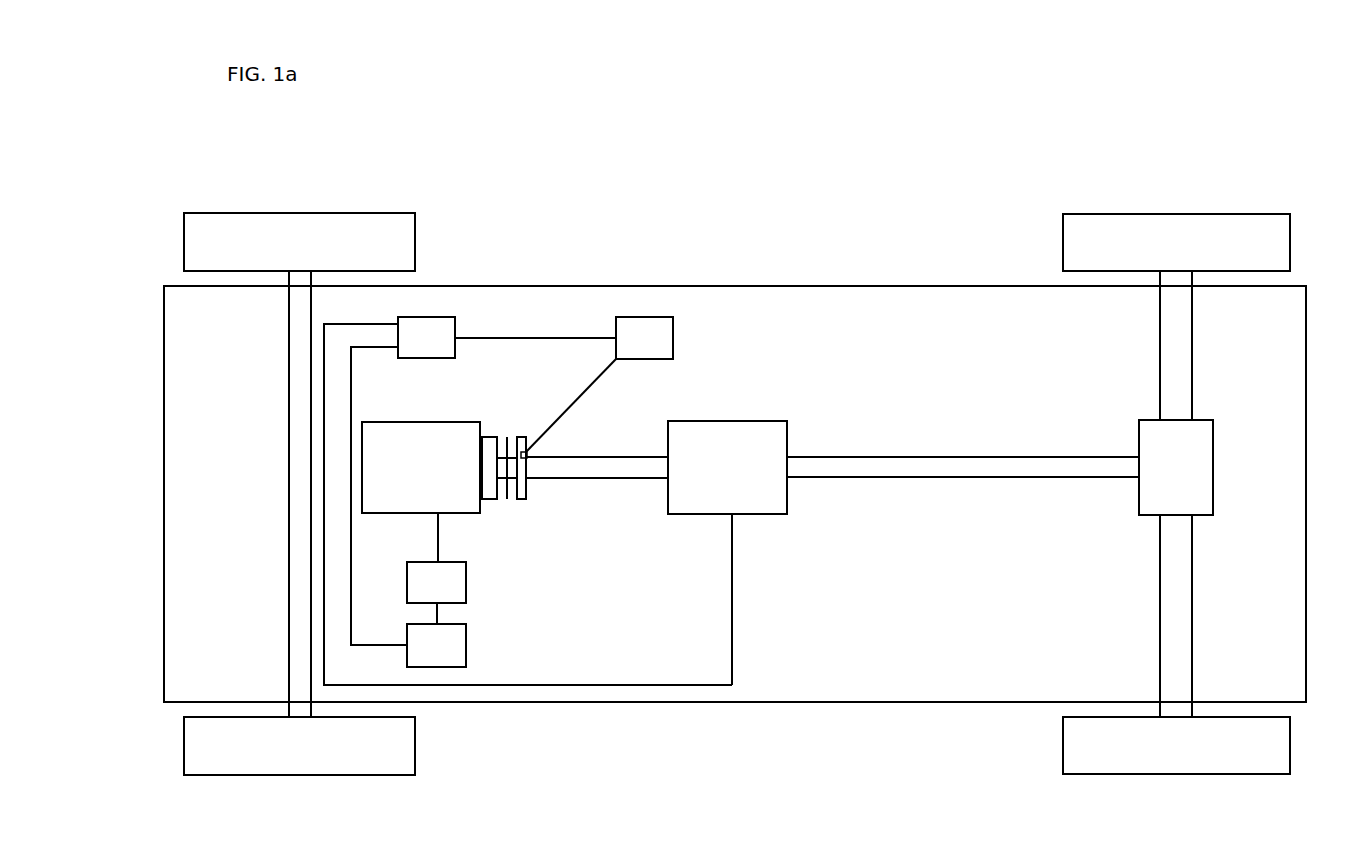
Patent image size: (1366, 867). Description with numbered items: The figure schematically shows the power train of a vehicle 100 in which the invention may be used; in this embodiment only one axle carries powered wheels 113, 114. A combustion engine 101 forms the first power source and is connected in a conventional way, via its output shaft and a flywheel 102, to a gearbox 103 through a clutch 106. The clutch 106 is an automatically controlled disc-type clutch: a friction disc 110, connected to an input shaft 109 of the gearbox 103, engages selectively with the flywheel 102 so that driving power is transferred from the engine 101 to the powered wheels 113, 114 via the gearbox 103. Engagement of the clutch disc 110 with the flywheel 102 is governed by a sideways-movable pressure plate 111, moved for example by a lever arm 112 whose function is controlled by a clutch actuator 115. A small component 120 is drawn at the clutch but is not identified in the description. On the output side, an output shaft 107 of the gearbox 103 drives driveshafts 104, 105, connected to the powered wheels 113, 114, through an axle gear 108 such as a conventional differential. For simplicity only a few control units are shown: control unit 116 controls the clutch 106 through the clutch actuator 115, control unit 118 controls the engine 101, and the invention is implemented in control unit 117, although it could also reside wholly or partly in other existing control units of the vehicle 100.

The vehicle 100 is at (636, 120).
The combustion engine 101 is at (392, 518).
The flywheel 102 is at (486, 452).
The gearbox 103 is at (730, 432).
The driveshaft 104 is at (1180, 343).
The driveshaft 105 is at (1185, 623).
The clutch 106 is at (531, 510).
The output shaft 107 is at (1057, 468).
The axle gear 108 is at (1207, 463).
The input shaft 109 is at (632, 470).
The friction element (disc) 110 is at (510, 505).
The pressure plate 111 is at (537, 492).
The lever arm 112 is at (592, 383).
The powered wheel 113 is at (1285, 233).
The powered wheel 114 is at (1285, 748).
The clutch actuator 115 is at (673, 338).
The control unit 116 is at (411, 355).
The control unit 117 is at (436, 645).
The control unit 118 is at (436, 593).
The release bearing 120 is at (527, 451).